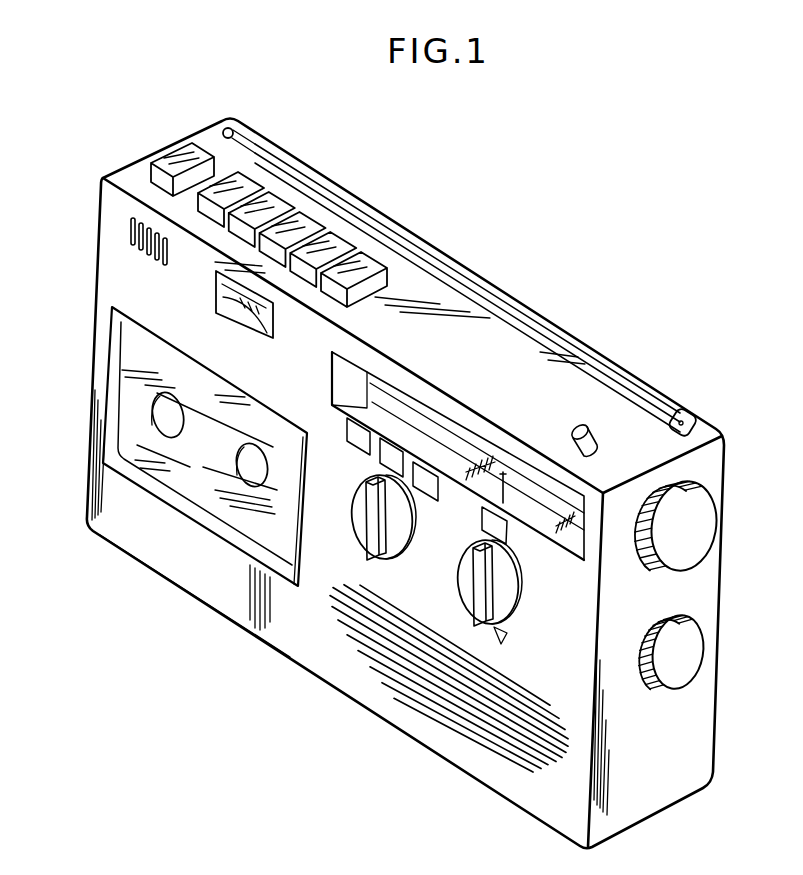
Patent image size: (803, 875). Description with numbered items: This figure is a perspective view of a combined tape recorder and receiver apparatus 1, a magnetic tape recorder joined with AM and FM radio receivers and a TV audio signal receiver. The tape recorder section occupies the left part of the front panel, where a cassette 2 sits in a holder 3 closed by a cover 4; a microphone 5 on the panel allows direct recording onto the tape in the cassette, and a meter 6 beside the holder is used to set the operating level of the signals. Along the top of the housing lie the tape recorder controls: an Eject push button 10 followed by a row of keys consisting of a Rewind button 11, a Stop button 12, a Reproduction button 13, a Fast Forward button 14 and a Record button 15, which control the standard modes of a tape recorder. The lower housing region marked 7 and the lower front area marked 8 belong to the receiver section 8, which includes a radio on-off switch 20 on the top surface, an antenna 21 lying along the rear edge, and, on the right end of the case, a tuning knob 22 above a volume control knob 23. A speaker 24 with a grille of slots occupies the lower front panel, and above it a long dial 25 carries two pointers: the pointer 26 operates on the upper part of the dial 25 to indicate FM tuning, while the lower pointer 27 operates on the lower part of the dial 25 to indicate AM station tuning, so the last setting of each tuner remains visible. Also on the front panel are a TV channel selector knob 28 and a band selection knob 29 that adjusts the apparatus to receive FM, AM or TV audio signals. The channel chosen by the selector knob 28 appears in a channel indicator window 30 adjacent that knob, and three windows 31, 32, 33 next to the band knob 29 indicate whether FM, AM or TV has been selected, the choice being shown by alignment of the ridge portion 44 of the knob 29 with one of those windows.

The combined tape recorder and receiver apparatus 1 is at (612, 298).
The cassette 2 is at (203, 463).
The holder 3 is at (178, 373).
The cover 4 is at (263, 541).
The microphone 5 is at (140, 246).
The meter 6 is at (245, 312).
The front panel 7 is at (92, 334).
The receiver section 8 is at (363, 712).
The Eject push button 10 is at (167, 160).
The Rewind button 11 is at (248, 188).
The Stop button 12 is at (278, 209).
The Reproduction button 13 is at (308, 230).
The Fast Forward button 14 is at (339, 250).
The Record button 15 is at (371, 268).
The radio on-off switch 20 is at (586, 430).
The antenna 21 is at (461, 274).
The tuning knob 22 is at (667, 555).
The volume control knob 23 is at (660, 678).
The speaker 24 is at (470, 732).
The dial 25 is at (428, 410).
The pointer 26 is at (450, 430).
The pointer 27 is at (505, 472).
The TV channel selector knob 28 is at (508, 596).
The band selection knob 29 is at (402, 525).
The channel indicator window 30 is at (505, 531).
The indicating window 31 is at (347, 432).
The indicating window 32 is at (380, 460).
The indicating window 33 is at (424, 497).
The ridge portion 44 is at (368, 515).